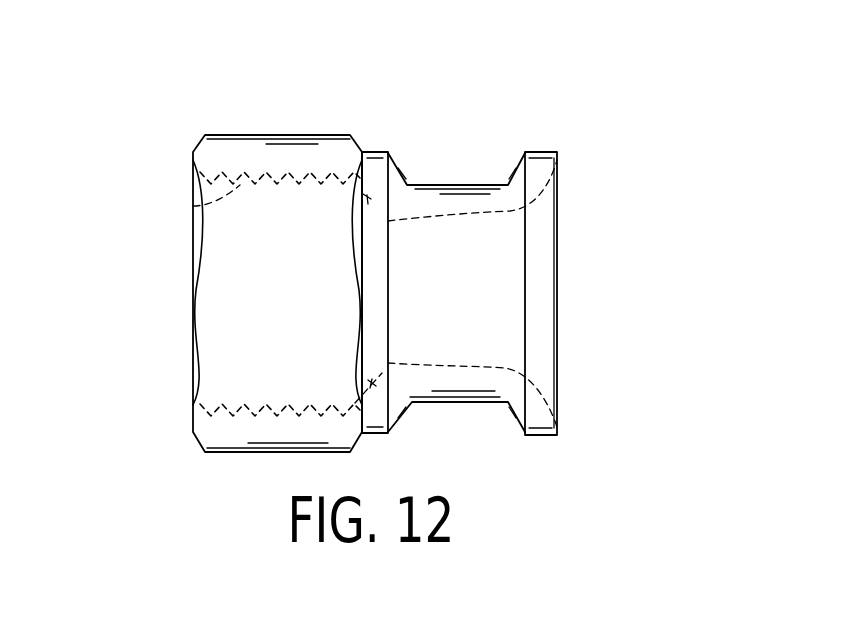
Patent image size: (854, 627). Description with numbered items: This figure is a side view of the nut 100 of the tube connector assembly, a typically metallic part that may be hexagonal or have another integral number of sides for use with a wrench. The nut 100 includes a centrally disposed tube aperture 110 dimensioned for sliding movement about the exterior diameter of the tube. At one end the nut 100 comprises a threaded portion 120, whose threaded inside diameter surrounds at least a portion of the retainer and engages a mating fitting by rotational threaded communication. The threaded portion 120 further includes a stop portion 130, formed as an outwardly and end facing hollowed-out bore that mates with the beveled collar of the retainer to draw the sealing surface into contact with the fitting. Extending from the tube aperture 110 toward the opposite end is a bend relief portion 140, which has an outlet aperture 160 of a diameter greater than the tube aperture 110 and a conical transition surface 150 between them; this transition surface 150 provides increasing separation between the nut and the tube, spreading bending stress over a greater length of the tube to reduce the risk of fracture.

The nut 100 is at (156, 102).
The tube aperture 110 is at (388, 363).
The threaded portion 120 is at (193, 203).
The stop portion 130 is at (388, 220).
The bend relief portion 140 is at (466, 192).
The transition surface 150 is at (518, 233).
The outlet aperture 160 is at (558, 160).